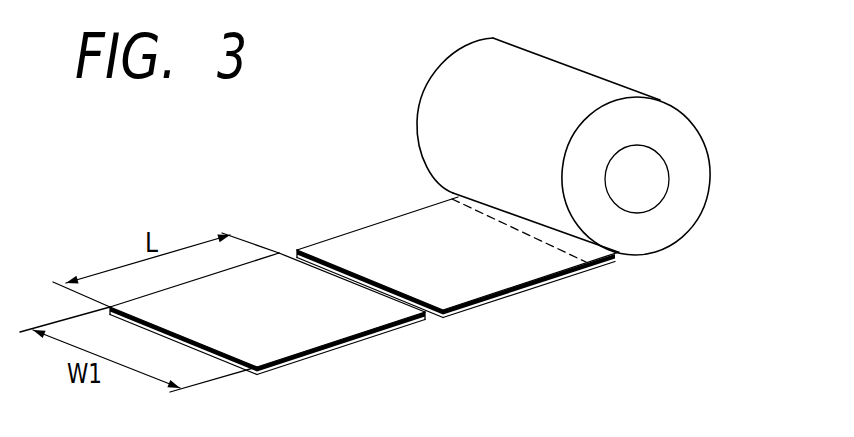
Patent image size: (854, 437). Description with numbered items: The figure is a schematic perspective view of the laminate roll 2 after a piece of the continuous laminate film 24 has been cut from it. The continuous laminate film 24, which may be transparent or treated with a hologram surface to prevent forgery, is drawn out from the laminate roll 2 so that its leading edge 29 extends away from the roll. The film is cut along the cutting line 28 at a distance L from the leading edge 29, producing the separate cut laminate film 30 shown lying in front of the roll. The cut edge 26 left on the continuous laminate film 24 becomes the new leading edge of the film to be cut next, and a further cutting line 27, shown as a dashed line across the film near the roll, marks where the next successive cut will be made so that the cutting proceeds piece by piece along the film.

The laminate roll 2 is at (570, 87).
The continuous laminate film 24 is at (458, 277).
The cut edge 26 is at (433, 314).
The cutting line 27 is at (455, 210).
The cutting line 28 is at (267, 247).
The leading edge 29 is at (125, 311).
The cut laminate film 30 is at (244, 282).